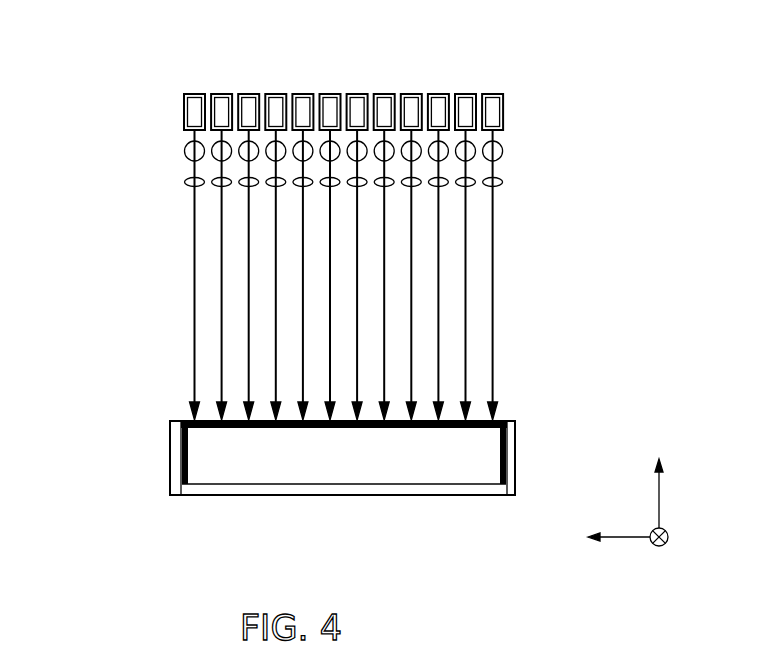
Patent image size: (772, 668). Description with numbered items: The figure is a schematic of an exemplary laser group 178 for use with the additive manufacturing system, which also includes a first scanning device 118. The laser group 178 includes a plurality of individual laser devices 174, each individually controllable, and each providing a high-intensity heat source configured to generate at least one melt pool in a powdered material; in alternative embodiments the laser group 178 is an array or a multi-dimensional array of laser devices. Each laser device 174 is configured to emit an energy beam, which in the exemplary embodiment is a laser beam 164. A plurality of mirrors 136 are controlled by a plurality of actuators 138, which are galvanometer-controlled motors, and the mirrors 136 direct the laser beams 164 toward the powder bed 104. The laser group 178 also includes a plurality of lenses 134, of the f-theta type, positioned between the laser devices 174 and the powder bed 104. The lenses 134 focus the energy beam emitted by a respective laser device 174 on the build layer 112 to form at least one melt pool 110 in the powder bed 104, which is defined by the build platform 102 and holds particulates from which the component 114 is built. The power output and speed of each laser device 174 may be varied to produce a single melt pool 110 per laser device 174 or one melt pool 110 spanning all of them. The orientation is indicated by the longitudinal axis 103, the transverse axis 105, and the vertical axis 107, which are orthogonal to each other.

The laser group 178 is at (132, 90).
The first scanning device 118 is at (549, 83).
The laser device 174 is at (194, 94).
The actuator 138 is at (222, 103).
The mirror 136 is at (190, 150).
The lens 134 is at (503, 182).
The laser beam 164 is at (497, 300).
The build layer 112 is at (206, 401).
The melt pool 110 is at (497, 418).
The component 114 is at (203, 463).
The powder bed 104 is at (503, 450).
The build platform 102 is at (207, 489).
The longitudinal axis 103 is at (666, 543).
The vertical axis 107 is at (661, 507).
The transverse axis 105 is at (627, 540).